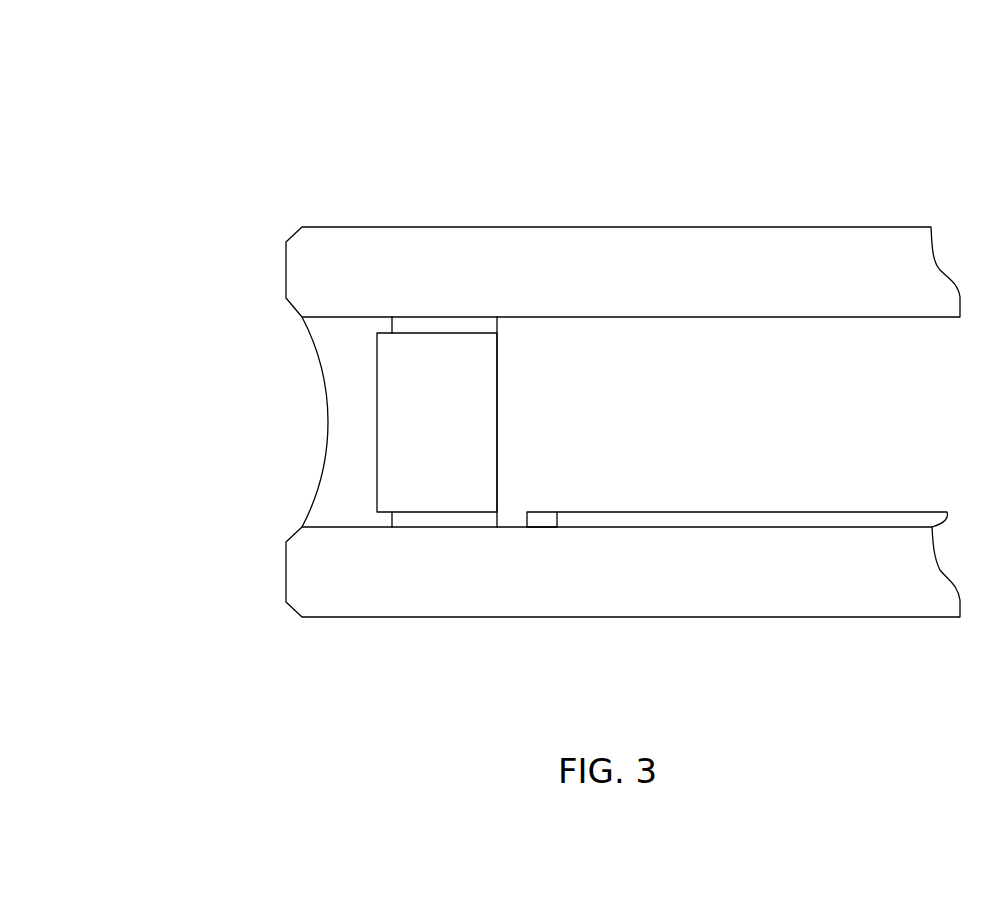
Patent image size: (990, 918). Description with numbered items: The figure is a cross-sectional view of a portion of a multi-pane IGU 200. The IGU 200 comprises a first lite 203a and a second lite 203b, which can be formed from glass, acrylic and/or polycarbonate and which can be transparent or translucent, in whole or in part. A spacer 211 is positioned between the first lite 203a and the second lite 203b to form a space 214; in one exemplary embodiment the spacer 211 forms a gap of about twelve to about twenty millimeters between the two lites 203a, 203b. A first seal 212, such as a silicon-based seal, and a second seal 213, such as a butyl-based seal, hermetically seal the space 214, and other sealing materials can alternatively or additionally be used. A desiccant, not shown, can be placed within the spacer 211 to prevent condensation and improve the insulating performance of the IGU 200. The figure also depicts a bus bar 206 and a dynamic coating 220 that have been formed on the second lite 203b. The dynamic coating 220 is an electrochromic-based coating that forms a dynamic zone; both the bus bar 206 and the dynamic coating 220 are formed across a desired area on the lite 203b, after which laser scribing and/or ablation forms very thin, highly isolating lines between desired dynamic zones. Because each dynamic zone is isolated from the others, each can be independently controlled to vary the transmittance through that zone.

The multi-pane IGU 200 is at (201, 99).
The first lite 203a is at (662, 273).
The second lite 203b is at (692, 572).
The bus bar 206 is at (542, 512).
The spacer 211 is at (437, 392).
The first seal 212 is at (347, 437).
The second seal 213 is at (422, 317).
The space 214 is at (647, 393).
The dynamic coating 220 is at (752, 512).